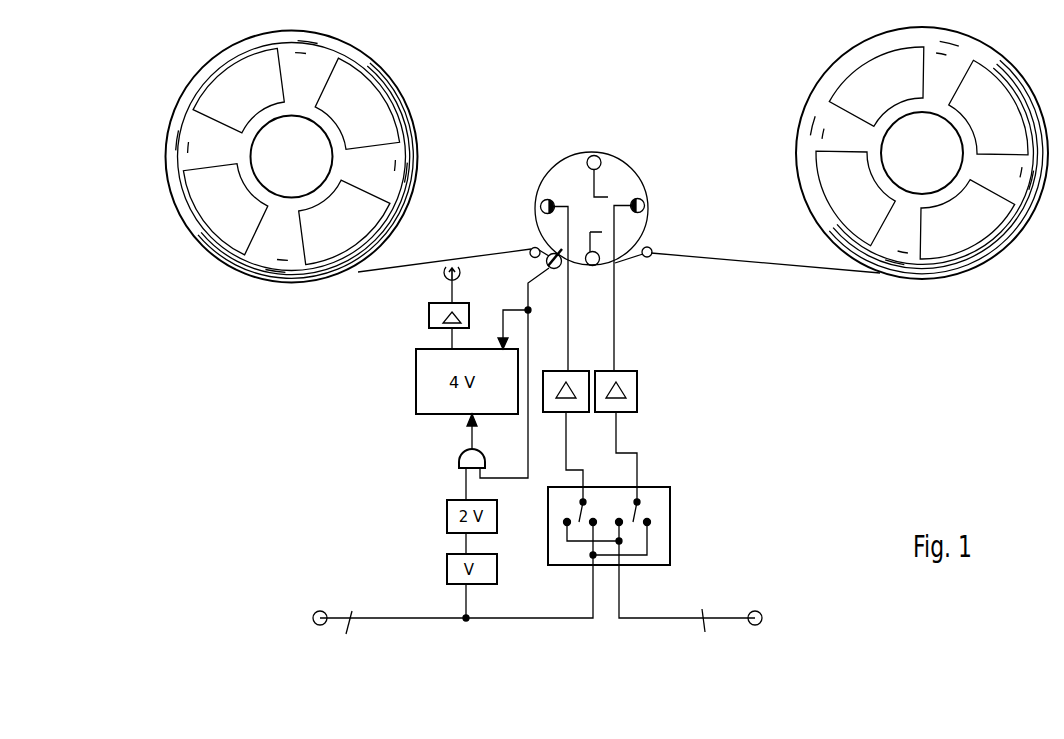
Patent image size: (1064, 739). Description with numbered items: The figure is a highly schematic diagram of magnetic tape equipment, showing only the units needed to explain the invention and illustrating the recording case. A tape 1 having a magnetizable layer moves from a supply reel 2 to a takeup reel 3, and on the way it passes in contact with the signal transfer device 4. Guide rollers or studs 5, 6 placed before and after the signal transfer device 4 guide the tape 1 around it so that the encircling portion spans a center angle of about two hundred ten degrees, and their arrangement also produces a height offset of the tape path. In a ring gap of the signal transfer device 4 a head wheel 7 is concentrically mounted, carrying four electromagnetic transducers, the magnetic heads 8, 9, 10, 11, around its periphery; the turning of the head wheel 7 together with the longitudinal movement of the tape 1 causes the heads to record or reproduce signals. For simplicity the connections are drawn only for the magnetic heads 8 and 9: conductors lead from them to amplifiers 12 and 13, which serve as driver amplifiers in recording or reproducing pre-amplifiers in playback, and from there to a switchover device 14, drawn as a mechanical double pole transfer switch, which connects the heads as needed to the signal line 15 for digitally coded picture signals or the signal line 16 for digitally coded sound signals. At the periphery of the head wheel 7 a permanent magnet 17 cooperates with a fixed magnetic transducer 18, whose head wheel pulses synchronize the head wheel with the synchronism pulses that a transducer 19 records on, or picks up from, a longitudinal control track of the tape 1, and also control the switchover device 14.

The tape 1 is at (722, 257).
The supply reel 2 is at (327, 37).
The takeup reel 3 is at (963, 42).
The signal transfer device 4 is at (598, 232).
The guide roller 5 is at (532, 247).
The guide roller 6 is at (650, 250).
The head wheel 7 is at (565, 168).
The magnetic head 8 is at (542, 201).
The magnetic head 9 is at (641, 202).
The magnetic head 10 is at (597, 155).
The magnetic head 11 is at (600, 260).
The amplifier 12 is at (577, 373).
The amplifier 13 is at (632, 380).
The switchover device 14 is at (658, 497).
The signal line 15 is at (266, 635).
The signal line 16 is at (784, 632).
The permanent magnet 17 is at (554, 244).
The magnetic transducer 18 is at (557, 268).
The transducer 19 is at (463, 272).